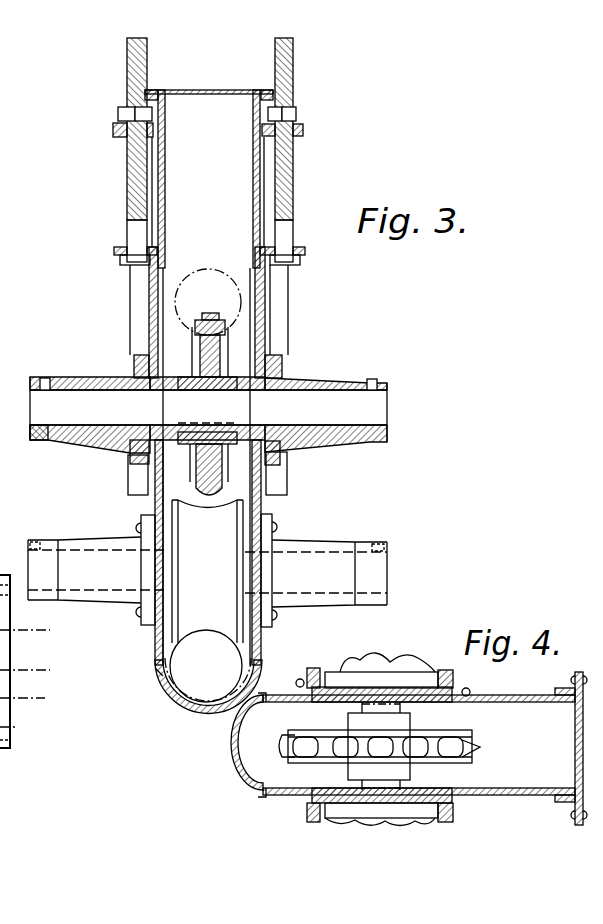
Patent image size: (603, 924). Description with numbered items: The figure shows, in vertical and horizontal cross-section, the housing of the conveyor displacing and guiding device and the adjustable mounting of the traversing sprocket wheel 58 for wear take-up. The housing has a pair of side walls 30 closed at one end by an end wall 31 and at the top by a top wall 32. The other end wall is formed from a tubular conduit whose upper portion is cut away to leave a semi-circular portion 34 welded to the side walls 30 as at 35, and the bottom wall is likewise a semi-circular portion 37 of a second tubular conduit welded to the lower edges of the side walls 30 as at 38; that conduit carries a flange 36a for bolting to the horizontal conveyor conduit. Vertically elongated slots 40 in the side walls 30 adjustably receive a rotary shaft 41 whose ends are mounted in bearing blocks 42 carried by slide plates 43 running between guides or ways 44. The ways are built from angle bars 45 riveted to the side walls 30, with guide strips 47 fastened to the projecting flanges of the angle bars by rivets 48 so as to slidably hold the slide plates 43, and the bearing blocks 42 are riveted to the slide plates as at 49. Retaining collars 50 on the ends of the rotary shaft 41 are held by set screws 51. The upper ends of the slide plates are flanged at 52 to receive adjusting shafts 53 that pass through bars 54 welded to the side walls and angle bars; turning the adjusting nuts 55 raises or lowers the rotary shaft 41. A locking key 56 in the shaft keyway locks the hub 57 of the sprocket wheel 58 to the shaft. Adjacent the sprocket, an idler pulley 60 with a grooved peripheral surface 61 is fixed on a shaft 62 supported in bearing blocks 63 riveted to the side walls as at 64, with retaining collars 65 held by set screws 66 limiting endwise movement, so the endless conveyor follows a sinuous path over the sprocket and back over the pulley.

In FIG. 3, the side walls 30 is at (152, 204).
In FIG. 4, the side walls 30 is at (517, 695).
In FIG. 4, the end wall 31 is at (575, 751).
In FIG. 3, the top wall 32 is at (212, 90).
In FIG. 4, the semi-circular portion 34 is at (232, 746).
In FIG. 4, the weld 35 is at (250, 706).
In FIG. 3, the flange 36a is at (10, 724).
In FIG. 3, the semi-circular portion 37 is at (182, 702).
In FIG. 3, the weld 38 is at (158, 672).
In FIG. 4, the weld 38 is at (262, 680).
In FIG. 3, the elongated slots 40 is at (150, 286).
In FIG. 3, the rotary shaft 41 is at (330, 405).
In FIG. 4, the rotary shaft 41 is at (410, 786).
In FIG. 3, the bearing blocks 42 is at (88, 377).
In FIG. 4, the bearing blocks 42 is at (425, 655).
In FIG. 3, the slide plates 43 is at (149, 302).
In FIG. 4, the slide plates 43 is at (392, 672).
In FIG. 3, the guides or ways 44 is at (134, 331).
In FIG. 4, the guides or ways 44 is at (455, 688).
In FIG. 3, the angle bars 45 is at (135, 340).
In FIG. 4, the angle bars 45 is at (300, 681).
In FIG. 4, the guide strips 47 is at (320, 672).
In FIG. 4, the rivets 48 is at (310, 668).
In FIG. 3, the rivets 49 is at (131, 455).
In FIG. 3, the retaining collars 50 is at (30, 440).
In FIG. 3, the set screws 51 is at (45, 378).
In FIG. 3, the flange 52 is at (114, 250).
In FIG. 3, the adjusting shafts 53 is at (127, 176).
In FIG. 3, the bars 54 is at (113, 130).
In FIG. 3, the adjusting nuts 55 is at (118, 112).
In FIG. 3, the locking key 56 is at (185, 440).
In FIG. 3, the hub 57 is at (232, 377).
In FIG. 4, the hub 57 is at (350, 723).
In FIG. 3, the sprocket wheel 58 is at (213, 313).
In FIG. 4, the sprocket wheel 58 is at (480, 746).
In FIG. 3, the idler pulley 60 is at (261, 508).
In FIG. 3, the grooved peripheral surface 61 is at (206, 601).
In FIG. 3, the shaft 62 is at (141, 580).
In FIG. 3, the bearing blocks 63 is at (92, 540).
In FIG. 3, the rivets 64 is at (117, 644).
In FIG. 3, the retaining collars 65 is at (43, 596).
In FIG. 3, the set screws 66 is at (26, 540).